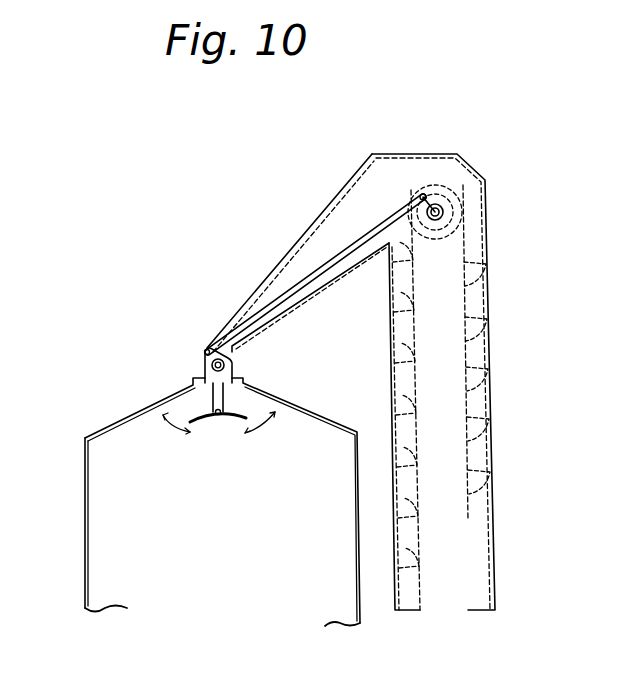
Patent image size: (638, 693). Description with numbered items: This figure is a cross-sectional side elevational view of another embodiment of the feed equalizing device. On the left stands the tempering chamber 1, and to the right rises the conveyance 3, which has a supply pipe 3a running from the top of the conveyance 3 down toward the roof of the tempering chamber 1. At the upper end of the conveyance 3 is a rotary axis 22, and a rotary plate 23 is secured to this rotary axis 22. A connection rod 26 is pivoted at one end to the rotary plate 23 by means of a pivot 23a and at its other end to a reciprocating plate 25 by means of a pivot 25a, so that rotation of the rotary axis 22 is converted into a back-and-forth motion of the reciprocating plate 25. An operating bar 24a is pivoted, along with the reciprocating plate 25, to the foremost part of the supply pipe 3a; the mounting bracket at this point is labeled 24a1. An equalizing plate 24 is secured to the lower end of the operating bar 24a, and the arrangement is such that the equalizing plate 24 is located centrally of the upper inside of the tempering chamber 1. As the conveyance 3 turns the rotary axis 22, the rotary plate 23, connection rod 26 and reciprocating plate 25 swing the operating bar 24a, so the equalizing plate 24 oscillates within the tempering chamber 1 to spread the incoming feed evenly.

The tempering chamber 1 is at (120, 535).
The conveyance 3 is at (492, 405).
The supply pipe 3a is at (322, 213).
The rotary axis 22 is at (441, 209).
The rotary plate 23 is at (438, 200).
The pivot 23a is at (421, 194).
The equalizing plate 24 is at (235, 418).
The operating bar 24a is at (223, 402).
The pivot bracket 24a1 is at (207, 368).
The reciprocating plate 25 is at (212, 362).
The pivot 25a is at (206, 349).
The connection rod 26 is at (305, 278).